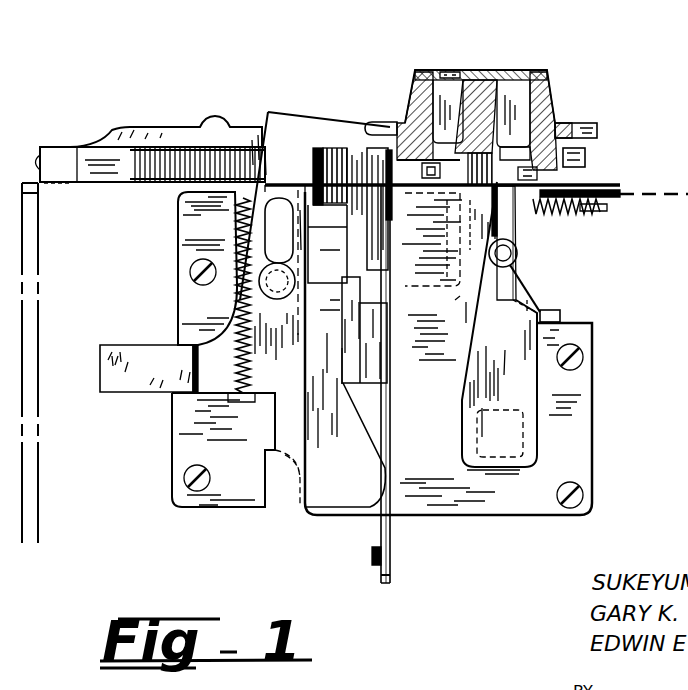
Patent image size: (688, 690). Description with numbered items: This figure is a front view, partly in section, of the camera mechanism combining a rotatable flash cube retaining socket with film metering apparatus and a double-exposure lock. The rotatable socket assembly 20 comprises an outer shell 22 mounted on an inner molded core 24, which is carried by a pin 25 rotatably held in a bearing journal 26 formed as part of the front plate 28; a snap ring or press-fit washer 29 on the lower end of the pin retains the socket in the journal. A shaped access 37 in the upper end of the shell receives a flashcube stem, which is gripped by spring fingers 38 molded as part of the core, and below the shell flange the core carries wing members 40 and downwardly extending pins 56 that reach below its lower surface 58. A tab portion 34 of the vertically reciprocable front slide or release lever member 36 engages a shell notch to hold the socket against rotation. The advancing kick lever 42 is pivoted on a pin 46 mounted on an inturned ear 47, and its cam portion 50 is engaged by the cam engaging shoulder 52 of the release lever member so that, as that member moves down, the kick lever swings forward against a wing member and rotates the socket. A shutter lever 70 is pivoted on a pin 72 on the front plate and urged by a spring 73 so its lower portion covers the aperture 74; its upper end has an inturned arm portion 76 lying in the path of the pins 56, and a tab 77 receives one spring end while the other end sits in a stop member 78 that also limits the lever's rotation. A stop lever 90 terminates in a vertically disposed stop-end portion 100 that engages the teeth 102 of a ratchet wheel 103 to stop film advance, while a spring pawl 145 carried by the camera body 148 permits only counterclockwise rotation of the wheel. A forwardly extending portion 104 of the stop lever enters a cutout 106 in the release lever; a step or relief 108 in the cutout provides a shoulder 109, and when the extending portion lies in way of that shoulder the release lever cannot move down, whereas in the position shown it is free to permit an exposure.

The socket assembly 20 is at (620, 116).
The outer shell 22 is at (552, 95).
The inner molded core 24 is at (523, 146).
The pin 25 is at (475, 85).
The bearing journal 26 is at (448, 237).
The front plate 28 is at (530, 523).
The snap ring or press-fit washer 29 is at (458, 300).
The tab portion 34 is at (400, 97).
The front slide or release lever member 36 is at (275, 433).
The shaped access 37 is at (447, 72).
The spring fingers 38 is at (412, 70).
The wing members 40 is at (586, 157).
The advancing kick lever 42 is at (380, 583).
The pin 46 is at (372, 550).
The inturned ear 47 is at (392, 573).
The cam portion 50 is at (385, 380).
The cam engaging shoulder 52 is at (343, 327).
The downwardly extending pins 56 is at (540, 173).
The lower surface 58 is at (575, 214).
The shutter lever 70 is at (528, 377).
The pin 72 is at (518, 263).
The spring 73 is at (537, 305).
The aperture 74 is at (533, 435).
The inturned arm portion 76 is at (552, 125).
The tab 77 is at (518, 215).
The stop member 78 is at (562, 313).
The stop lever 90 is at (625, 195).
The stop-end portion 100 is at (318, 150).
The teeth 102 is at (180, 145).
The ratchet wheel 103 is at (112, 128).
The forwardly extending portion 104 is at (286, 190).
The cutout 106 is at (330, 290).
The step or relief 108 is at (327, 244).
The shoulder 109 is at (340, 180).
The spring pawl 145 is at (58, 170).
The camera body 148 is at (38, 238).